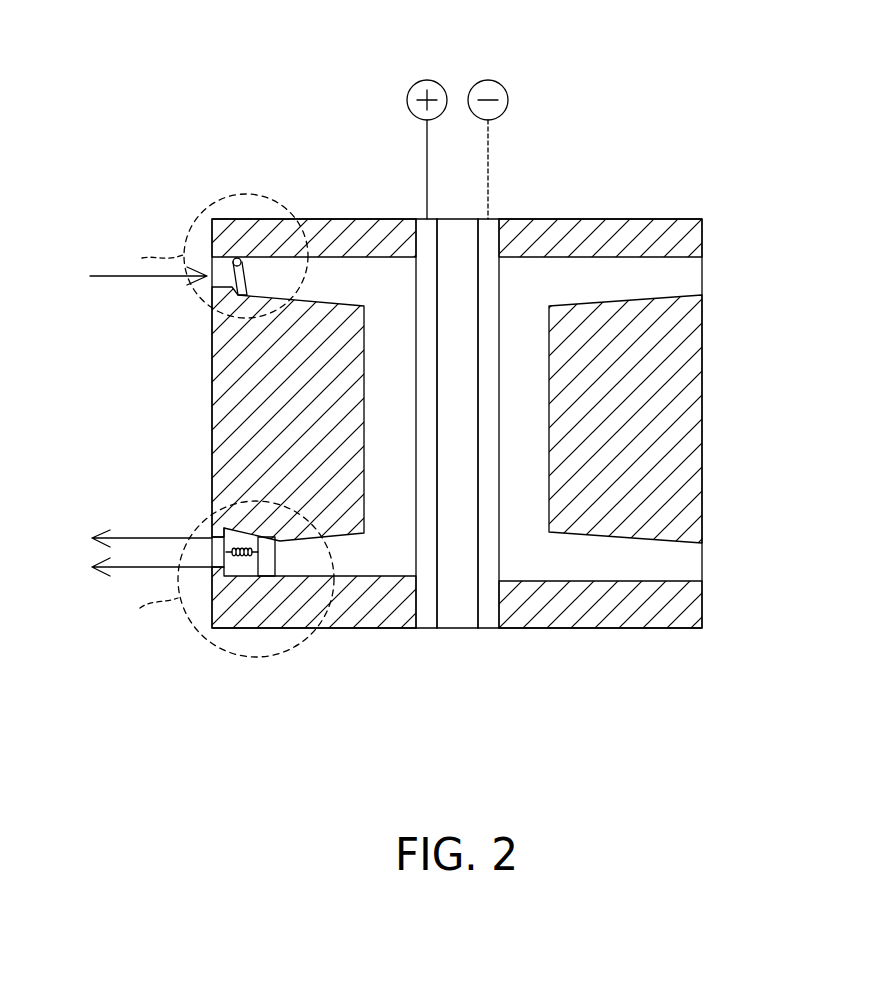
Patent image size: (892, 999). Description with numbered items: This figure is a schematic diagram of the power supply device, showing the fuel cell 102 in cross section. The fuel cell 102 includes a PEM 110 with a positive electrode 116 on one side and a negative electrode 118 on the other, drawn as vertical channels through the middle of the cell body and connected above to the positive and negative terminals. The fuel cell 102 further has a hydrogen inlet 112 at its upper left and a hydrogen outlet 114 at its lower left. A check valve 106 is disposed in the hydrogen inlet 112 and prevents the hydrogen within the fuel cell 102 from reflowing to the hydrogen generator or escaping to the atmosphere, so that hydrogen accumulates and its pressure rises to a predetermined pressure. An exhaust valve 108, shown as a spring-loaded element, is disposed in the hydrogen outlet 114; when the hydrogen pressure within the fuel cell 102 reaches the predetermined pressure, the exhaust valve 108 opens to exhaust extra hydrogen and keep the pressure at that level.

The fuel cell 102 is at (424, 391).
The check valve 106 is at (217, 263).
The exhaust valve 108 is at (236, 572).
The PEM 110 is at (462, 628).
The hydrogen inlet 112 is at (287, 270).
The hydrogen outlet 114 is at (300, 558).
The positive electrode 116 is at (423, 628).
The negative electrode 118 is at (488, 628).